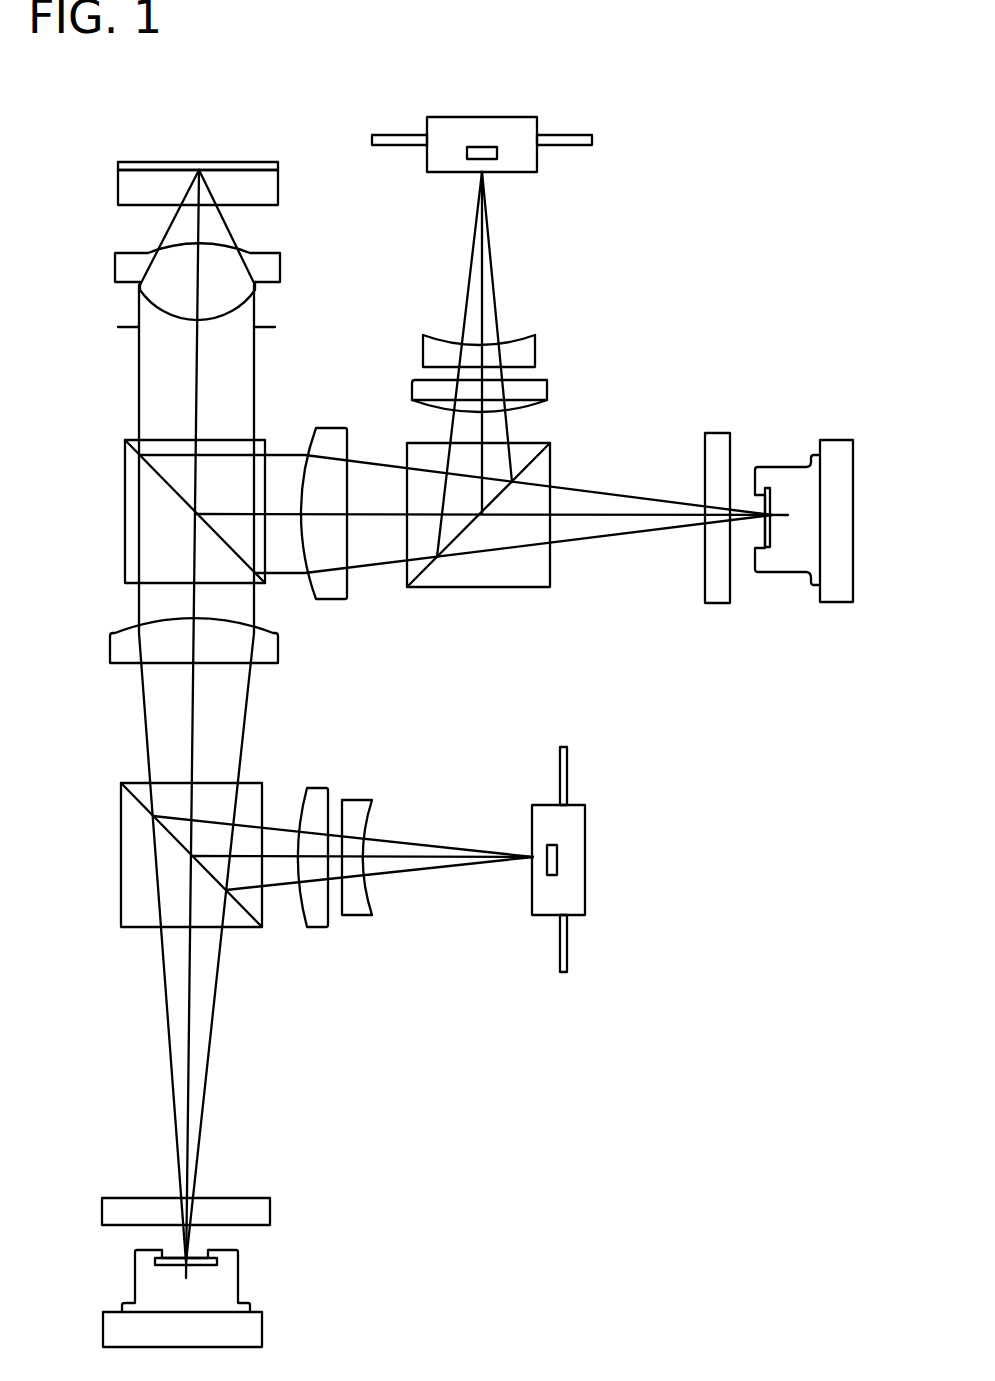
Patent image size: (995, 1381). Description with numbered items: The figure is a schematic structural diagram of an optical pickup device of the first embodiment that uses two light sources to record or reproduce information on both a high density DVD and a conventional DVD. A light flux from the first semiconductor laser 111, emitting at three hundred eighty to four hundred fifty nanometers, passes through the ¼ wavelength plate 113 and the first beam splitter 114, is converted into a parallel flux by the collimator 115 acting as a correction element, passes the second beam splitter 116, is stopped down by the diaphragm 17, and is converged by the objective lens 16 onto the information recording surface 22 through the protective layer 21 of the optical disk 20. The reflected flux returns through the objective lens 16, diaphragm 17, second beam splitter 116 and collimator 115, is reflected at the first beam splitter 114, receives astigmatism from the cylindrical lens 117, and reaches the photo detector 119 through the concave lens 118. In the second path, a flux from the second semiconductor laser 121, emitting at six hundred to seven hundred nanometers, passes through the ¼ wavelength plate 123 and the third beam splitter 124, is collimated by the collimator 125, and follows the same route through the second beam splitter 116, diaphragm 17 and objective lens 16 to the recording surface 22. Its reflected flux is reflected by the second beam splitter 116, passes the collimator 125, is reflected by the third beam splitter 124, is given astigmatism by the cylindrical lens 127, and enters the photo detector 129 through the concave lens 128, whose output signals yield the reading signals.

The optical disk 20 is at (162, 161).
The protective layer 21 is at (122, 200).
The information recording surface 22 is at (120, 165).
The objective lens 16 is at (115, 266).
The diaphragm 17 is at (130, 333).
The second beam splitter 116 is at (123, 512).
The collimator 125 is at (330, 427).
The collimator 115 is at (110, 647).
The photo detector 129 is at (518, 175).
The concave lens 128 is at (535, 350).
The cylindrical lens 127 is at (547, 392).
The third beam splitter 124 is at (550, 465).
The ¼ wavelength plate 123 is at (718, 432).
The second semiconductor laser 121 is at (785, 465).
The first beam splitter 114 is at (120, 857).
The cylindrical lens 117 is at (310, 928).
The concave lens 118 is at (355, 915).
The photo detector 119 is at (540, 915).
The ¼ wavelength plate 113 is at (270, 1212).
The first semiconductor laser 111 is at (262, 1332).